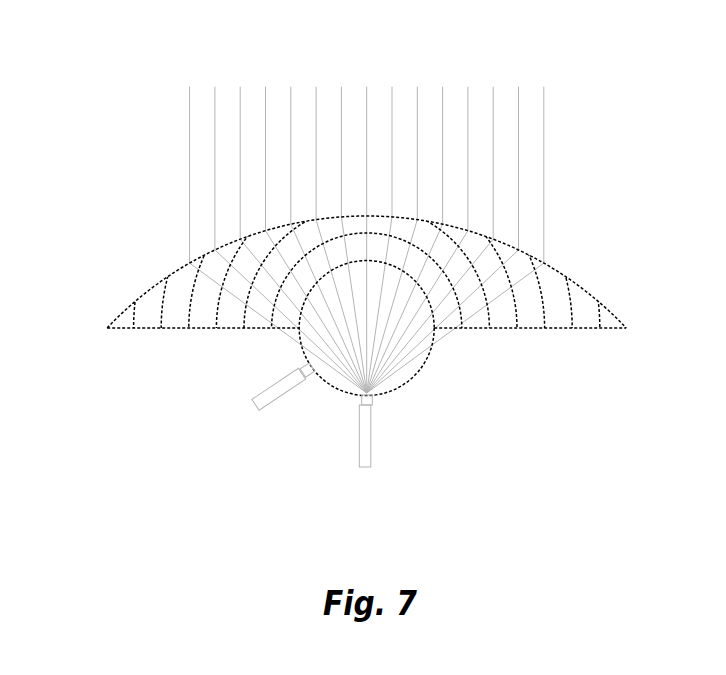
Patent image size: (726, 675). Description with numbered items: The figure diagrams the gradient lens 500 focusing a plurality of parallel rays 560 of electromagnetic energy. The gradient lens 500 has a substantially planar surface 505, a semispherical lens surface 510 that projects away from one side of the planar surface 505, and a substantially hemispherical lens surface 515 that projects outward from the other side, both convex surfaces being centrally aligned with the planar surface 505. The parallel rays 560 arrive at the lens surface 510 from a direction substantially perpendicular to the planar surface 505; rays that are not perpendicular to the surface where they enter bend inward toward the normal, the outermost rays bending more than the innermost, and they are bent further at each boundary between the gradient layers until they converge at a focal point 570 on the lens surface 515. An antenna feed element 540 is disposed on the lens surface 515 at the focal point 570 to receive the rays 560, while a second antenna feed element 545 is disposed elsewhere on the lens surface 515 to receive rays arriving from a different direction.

The gradient lens 500 is at (379, 328).
The planar surface 505 is at (533, 330).
The lens surface 510 is at (558, 269).
The lens surface 515 is at (412, 378).
The antenna feed element 540 is at (359, 467).
The antenna feed element 545 is at (252, 410).
The parallel rays 560 is at (552, 133).
The focal point 570 is at (372, 403).